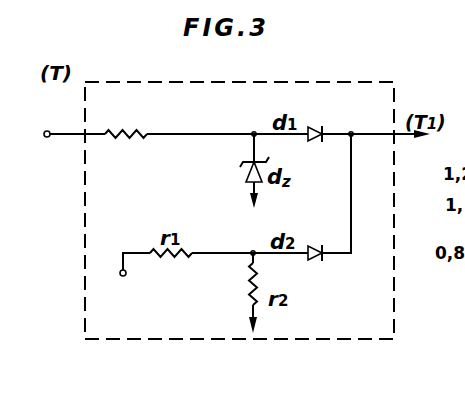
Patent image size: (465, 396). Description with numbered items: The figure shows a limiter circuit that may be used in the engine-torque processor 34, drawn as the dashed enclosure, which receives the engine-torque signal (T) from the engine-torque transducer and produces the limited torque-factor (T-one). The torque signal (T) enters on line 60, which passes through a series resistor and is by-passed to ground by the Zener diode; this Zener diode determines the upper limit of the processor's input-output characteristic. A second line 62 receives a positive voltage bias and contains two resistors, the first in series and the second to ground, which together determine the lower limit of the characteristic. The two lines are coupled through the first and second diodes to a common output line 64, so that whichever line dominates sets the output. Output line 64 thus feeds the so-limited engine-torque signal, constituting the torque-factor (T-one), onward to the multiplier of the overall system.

The line 60 is at (45, 137).
The common output line 64 is at (390, 150).
The second line 62 is at (126, 275).
The processor 34 is at (318, 340).